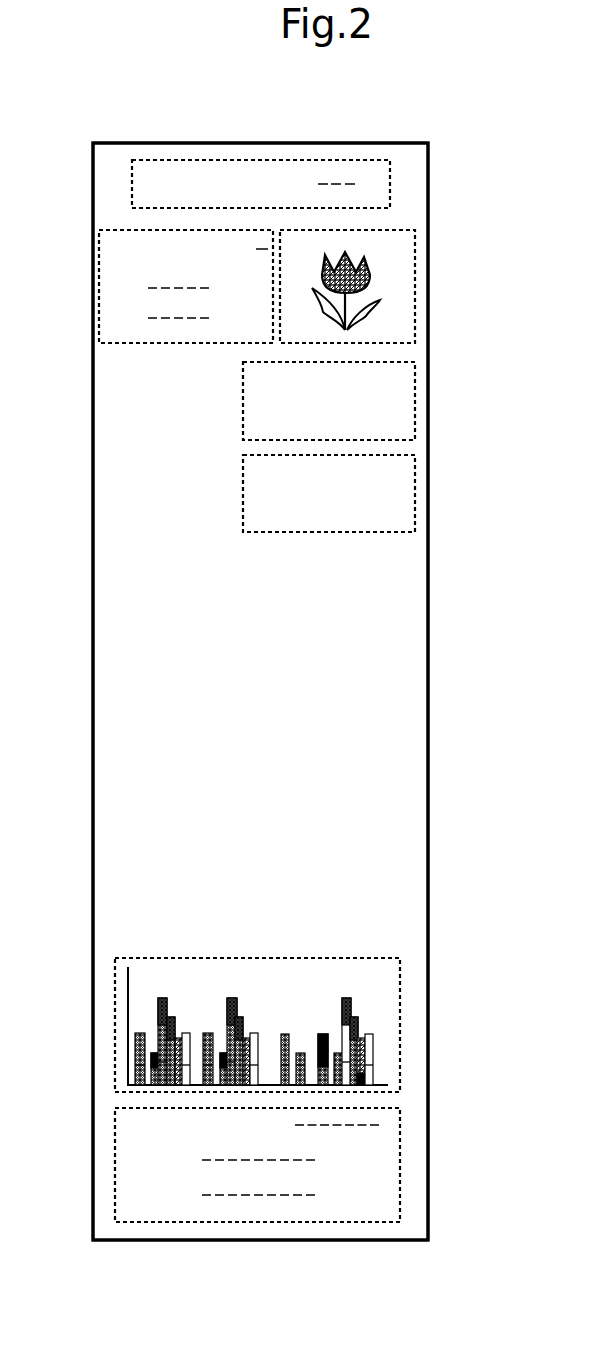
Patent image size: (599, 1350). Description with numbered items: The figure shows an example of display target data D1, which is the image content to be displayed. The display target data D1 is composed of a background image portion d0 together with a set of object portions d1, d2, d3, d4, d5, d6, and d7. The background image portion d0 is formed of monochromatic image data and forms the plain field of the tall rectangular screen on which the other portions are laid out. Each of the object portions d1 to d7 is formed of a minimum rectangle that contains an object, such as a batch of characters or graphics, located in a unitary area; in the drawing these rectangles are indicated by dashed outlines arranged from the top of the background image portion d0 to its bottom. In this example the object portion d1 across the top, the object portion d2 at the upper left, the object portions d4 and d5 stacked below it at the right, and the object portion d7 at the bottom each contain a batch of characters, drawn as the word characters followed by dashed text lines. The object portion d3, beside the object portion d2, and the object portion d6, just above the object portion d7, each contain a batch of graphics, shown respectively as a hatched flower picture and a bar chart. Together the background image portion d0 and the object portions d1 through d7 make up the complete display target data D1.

The display target data D1 is at (397, 142).
The background image portion d0 is at (388, 637).
The object portion d1 is at (285, 160).
The object portion d2 is at (95, 297).
The object portion d3 is at (417, 282).
The object portion d4 is at (415, 377).
The object portion d5 is at (415, 495).
The object portion d6 is at (402, 1030).
The object portion d7 is at (402, 1180).